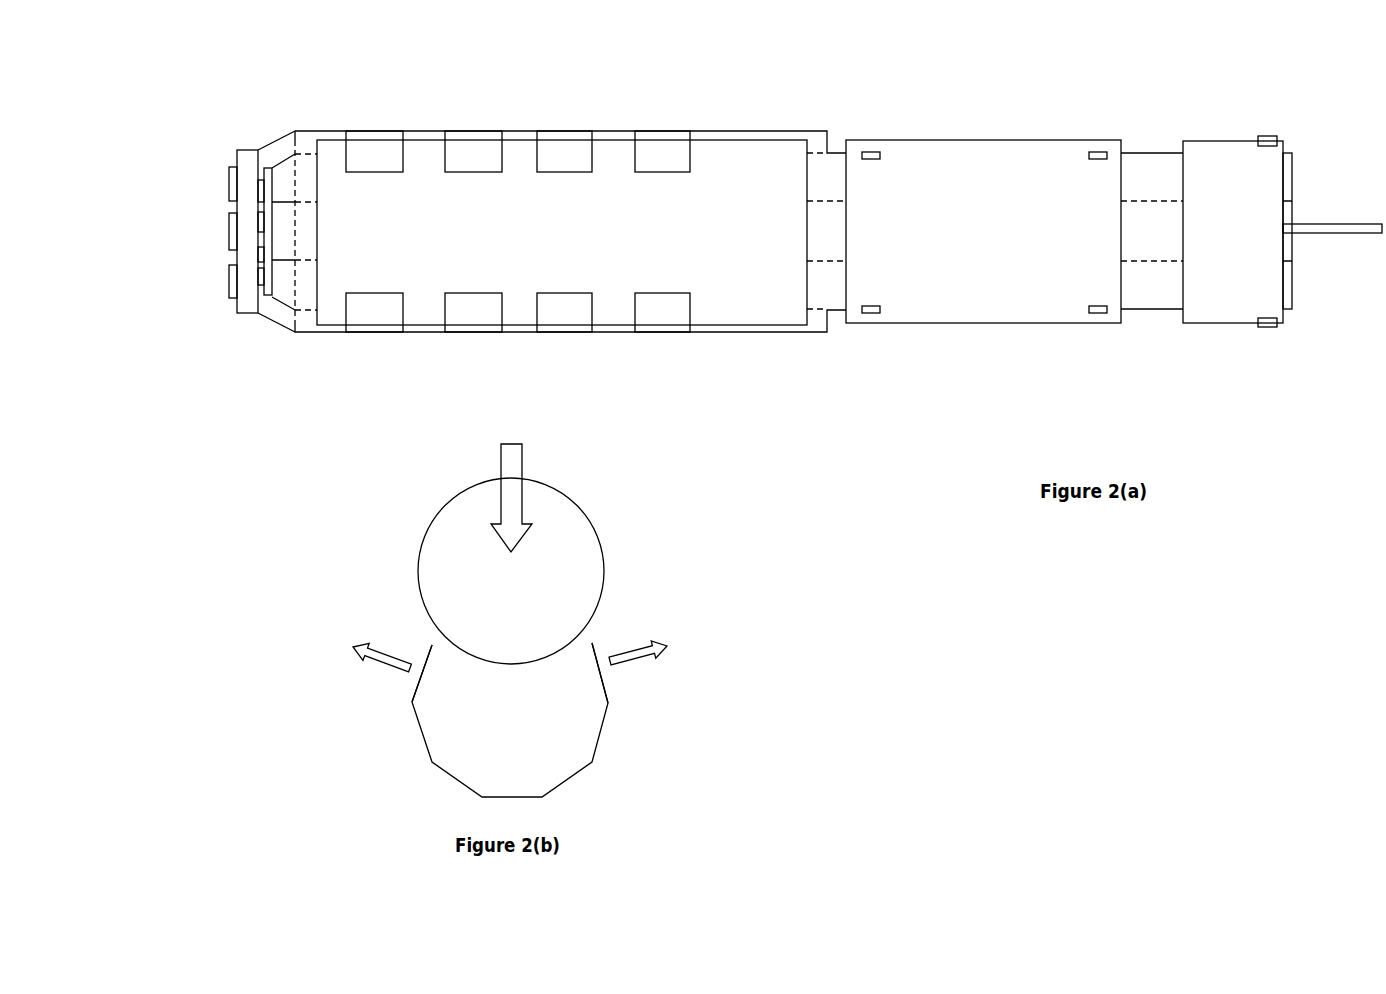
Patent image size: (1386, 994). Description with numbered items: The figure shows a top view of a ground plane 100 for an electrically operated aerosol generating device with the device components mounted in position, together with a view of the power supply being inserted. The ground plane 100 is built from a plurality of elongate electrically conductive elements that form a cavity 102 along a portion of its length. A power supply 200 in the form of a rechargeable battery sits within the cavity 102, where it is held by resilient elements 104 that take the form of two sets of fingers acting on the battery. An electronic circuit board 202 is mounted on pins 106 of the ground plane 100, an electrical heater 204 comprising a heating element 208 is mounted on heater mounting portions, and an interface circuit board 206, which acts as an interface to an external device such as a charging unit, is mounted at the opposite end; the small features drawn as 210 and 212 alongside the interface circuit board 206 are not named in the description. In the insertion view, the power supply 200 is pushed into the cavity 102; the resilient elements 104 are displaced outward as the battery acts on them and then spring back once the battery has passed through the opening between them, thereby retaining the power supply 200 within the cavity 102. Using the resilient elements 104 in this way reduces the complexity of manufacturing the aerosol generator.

In FIG. 2A, the ground plane 100 is at (817, 325).
In FIG. 2B, the ground plane 100 is at (605, 720).
In FIG. 2B, the cavity 102 is at (490, 699).
In FIG. 2A, the resilient elements 104 is at (572, 143).
In FIG. 2B, the resilient elements 104 is at (597, 648).
In FIG. 2A, the pins 106 is at (1098, 308).
In FIG. 2A, the power supply 200 is at (748, 155).
In FIG. 2B, the power supply 200 is at (445, 557).
In FIG. 2A, the electronic circuit board 202 is at (977, 158).
In FIG. 2A, the electrical heater 204 is at (1227, 155).
In FIG. 2A, the interface circuit board 206 is at (252, 167).
In FIG. 2A, the heating element 208 is at (1343, 228).
In FIG. 2A, the contact pads 210 is at (233, 292).
In FIG. 2A, the inner plate 212 is at (270, 172).